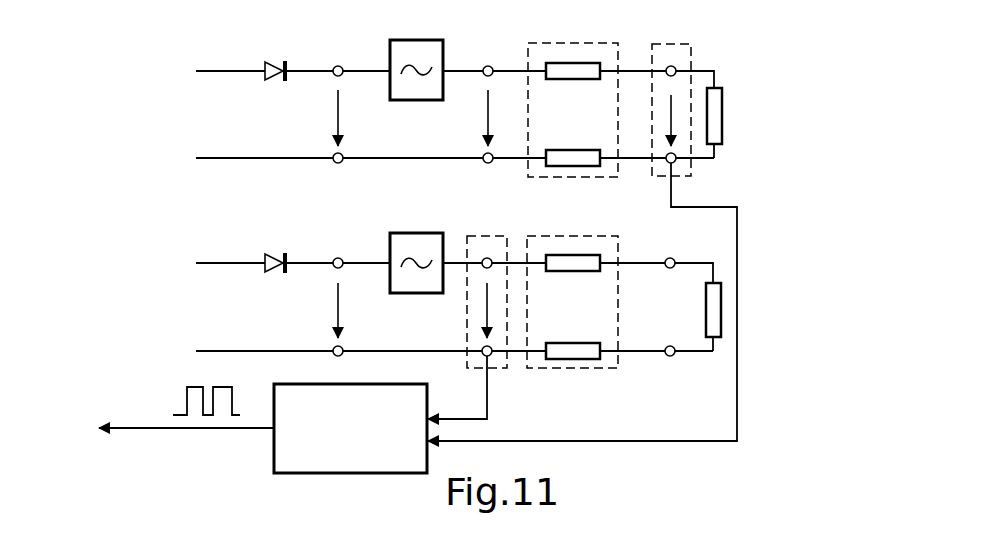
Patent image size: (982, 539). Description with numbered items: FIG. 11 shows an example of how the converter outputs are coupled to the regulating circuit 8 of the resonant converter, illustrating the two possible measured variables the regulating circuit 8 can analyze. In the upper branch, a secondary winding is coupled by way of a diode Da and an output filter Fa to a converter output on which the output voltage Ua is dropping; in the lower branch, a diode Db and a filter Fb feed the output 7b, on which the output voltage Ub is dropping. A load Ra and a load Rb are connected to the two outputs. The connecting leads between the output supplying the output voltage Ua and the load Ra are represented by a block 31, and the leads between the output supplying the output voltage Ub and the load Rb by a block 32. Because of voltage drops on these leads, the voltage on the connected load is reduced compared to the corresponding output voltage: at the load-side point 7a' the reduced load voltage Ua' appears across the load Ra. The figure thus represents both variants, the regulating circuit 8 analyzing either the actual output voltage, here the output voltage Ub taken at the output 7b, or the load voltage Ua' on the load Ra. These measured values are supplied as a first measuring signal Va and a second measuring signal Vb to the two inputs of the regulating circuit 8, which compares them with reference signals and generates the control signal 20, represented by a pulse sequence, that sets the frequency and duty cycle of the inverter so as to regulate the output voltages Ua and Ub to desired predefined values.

The diode Da is at (278, 47).
The output filter Fa is at (390, 48).
The block representing connecting leads 31 is at (528, 55).
The output voltage Ua is at (464, 118).
The load-side output 7a' is at (702, 105).
The load voltage Ua' is at (725, 107).
The load Ra is at (718, 134).
The diode Db is at (278, 239).
The filter Fb is at (390, 240).
The output 7b is at (487, 236).
The output voltage Ub is at (487, 305).
The block representing connecting leads 32 is at (618, 238).
The load Rb is at (721, 312).
The regulating circuit 8 is at (288, 455).
The control signal 20 is at (173, 400).
The second measuring signal Vb is at (487, 400).
The first measuring signal Va is at (660, 441).